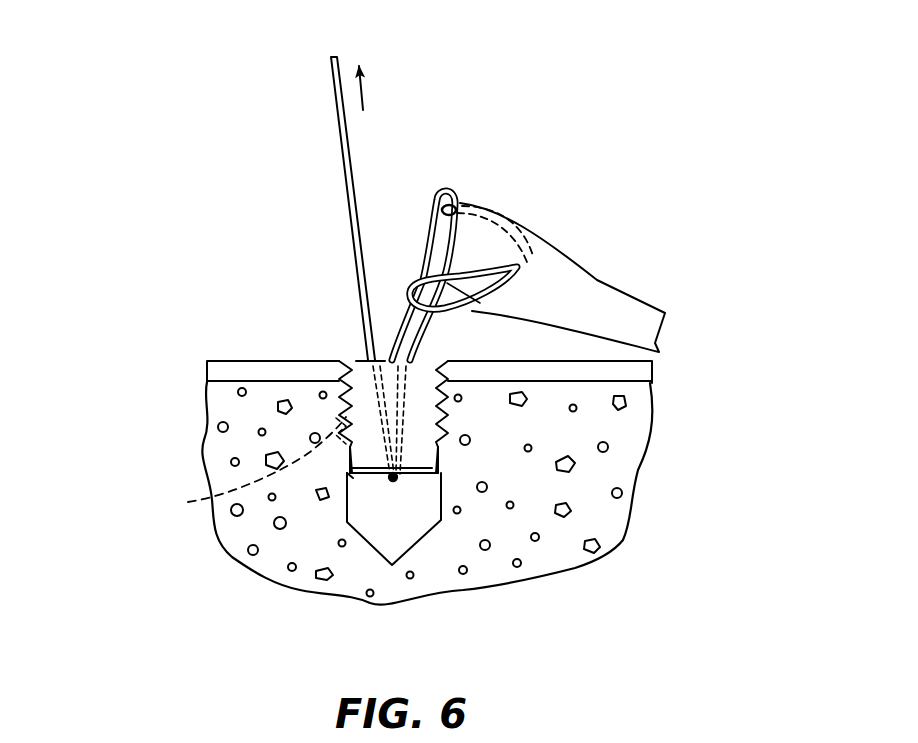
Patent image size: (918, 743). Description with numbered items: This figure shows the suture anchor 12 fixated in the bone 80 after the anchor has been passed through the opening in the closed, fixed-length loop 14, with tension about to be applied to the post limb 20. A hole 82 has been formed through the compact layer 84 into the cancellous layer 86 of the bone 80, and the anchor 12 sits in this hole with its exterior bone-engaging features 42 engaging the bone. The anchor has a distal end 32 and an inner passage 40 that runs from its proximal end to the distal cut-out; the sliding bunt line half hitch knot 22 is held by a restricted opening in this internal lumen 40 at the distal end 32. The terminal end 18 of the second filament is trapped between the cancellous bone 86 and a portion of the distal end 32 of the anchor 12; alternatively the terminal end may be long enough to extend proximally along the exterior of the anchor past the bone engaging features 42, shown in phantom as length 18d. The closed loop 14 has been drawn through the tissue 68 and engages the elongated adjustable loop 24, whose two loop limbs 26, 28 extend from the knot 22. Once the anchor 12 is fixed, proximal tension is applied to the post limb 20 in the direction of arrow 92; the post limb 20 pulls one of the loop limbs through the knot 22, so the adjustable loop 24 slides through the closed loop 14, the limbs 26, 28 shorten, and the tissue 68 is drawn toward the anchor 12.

The suture anchor 12 is at (452, 418).
The closed, fixed-length loop 14 is at (466, 188).
The terminal end 18 is at (353, 475).
The length of terminal end 18d is at (198, 501).
The post limb 20 is at (354, 278).
The sliding bunt line half hitch knot 22 is at (400, 486).
The adjustable loop 24 is at (421, 222).
The loop limb 26 is at (428, 326).
The loop limb 28 is at (422, 271).
The distal end 32 is at (445, 467).
The passage 40 is at (364, 357).
The bone-engaging feature 42 is at (345, 388).
The tissue 68 is at (610, 258).
The bone 80 is at (184, 444).
The hole 82 is at (406, 538).
The compact layer 84 is at (651, 373).
The cancellous layer 86 is at (640, 466).
The arrow 92 is at (365, 88).